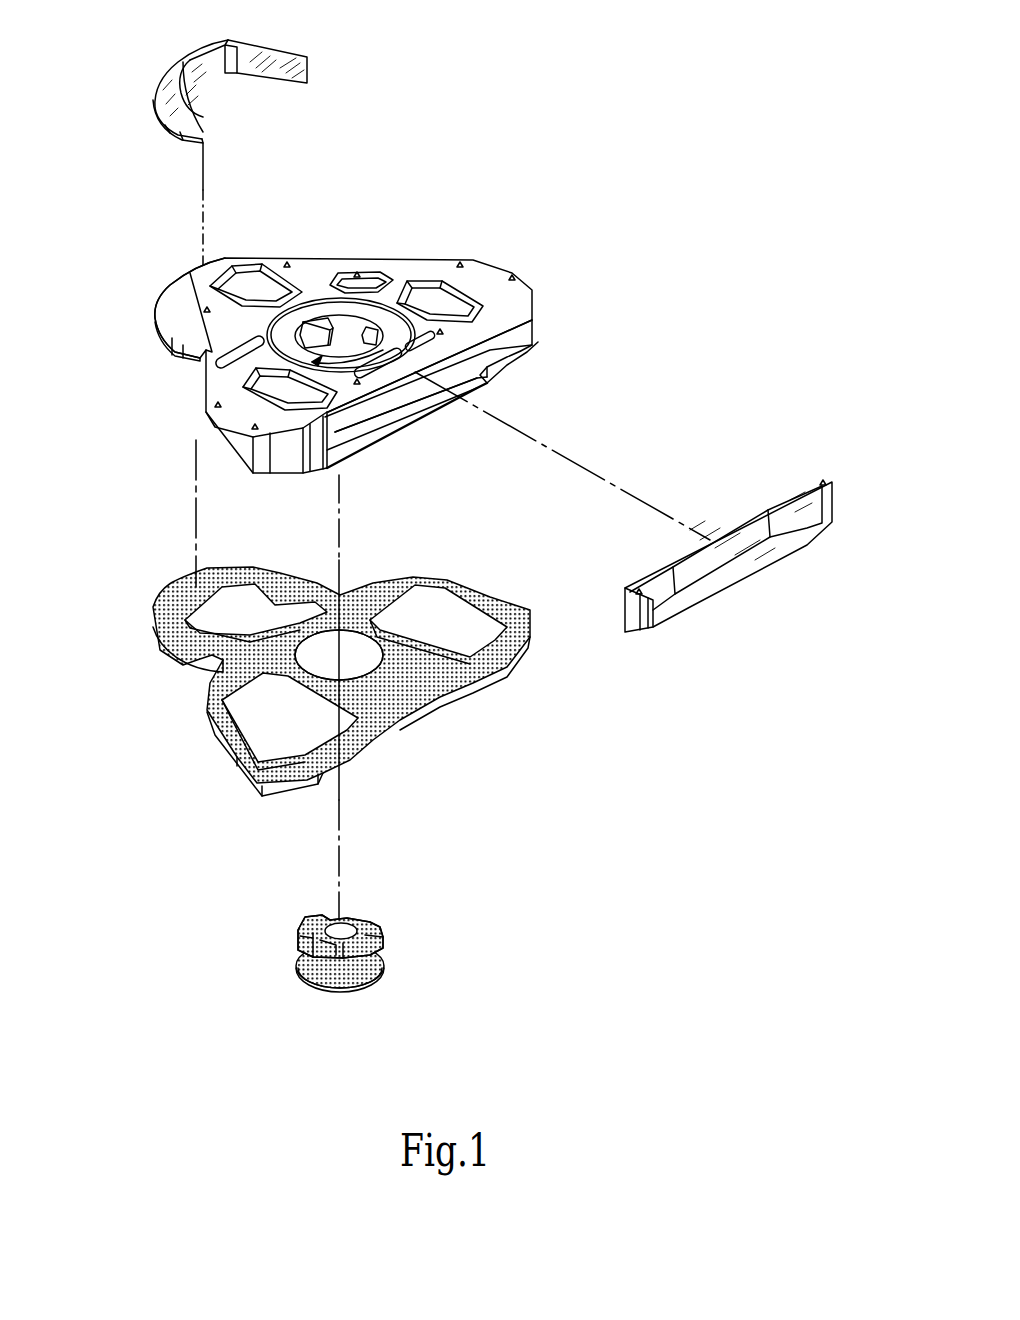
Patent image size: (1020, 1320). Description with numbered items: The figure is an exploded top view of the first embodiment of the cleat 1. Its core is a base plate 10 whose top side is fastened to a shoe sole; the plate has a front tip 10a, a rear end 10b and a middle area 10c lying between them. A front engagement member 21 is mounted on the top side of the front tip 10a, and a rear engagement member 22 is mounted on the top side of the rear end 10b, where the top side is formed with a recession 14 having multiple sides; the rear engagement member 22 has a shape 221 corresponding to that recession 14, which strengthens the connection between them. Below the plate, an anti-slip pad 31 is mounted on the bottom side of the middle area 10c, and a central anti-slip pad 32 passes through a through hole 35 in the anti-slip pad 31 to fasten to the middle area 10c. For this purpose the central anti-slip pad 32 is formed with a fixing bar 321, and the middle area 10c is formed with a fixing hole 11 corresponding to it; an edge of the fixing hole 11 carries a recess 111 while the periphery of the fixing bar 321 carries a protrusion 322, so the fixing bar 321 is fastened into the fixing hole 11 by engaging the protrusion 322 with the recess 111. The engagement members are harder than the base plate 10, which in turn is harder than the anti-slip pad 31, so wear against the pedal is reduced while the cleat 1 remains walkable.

The cleat 1 is at (148, 462).
The base plate 10 is at (372, 344).
The front tip 10a is at (170, 293).
The rear end 10b is at (428, 398).
The middle area 10c is at (370, 312).
The fixing hole 11 is at (341, 246).
The recess 111 is at (307, 323).
The recession 14 is at (530, 345).
The front engagement member 21 is at (173, 72).
The rear engagement member 22 is at (698, 643).
The shape 221 is at (645, 582).
The anti-slip pad 31 is at (290, 685).
The through hole 35 is at (360, 665).
The central anti-slip pad 32 is at (379, 937).
The fixing bar 321 is at (383, 963).
The protrusion 322 is at (383, 940).